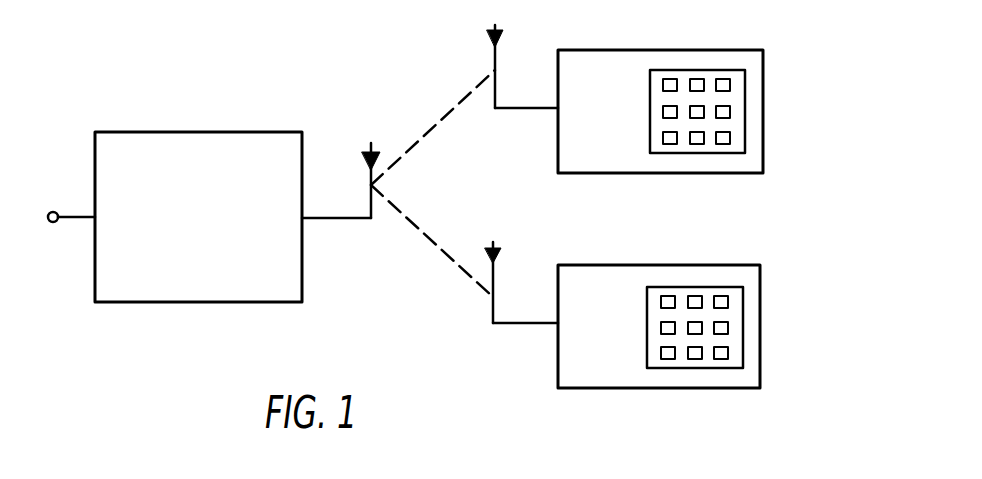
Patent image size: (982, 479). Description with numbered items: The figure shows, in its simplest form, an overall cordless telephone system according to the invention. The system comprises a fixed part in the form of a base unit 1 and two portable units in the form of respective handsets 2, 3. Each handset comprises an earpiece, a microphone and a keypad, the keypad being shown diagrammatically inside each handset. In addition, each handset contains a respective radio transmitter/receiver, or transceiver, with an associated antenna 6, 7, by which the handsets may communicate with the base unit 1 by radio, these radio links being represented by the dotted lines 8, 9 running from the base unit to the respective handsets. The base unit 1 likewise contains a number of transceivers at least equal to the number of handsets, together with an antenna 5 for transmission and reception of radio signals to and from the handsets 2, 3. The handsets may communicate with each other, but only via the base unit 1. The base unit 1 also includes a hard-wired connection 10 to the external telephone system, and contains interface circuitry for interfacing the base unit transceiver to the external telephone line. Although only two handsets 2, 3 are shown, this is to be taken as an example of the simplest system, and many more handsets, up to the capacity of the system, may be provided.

The base unit 1 is at (220, 230).
The handset 2 is at (691, 114).
The handset 3 is at (691, 323).
The antenna 5 is at (371, 143).
The antenna 6 is at (495, 57).
The antenna 7 is at (493, 316).
The dotted line 8 is at (430, 128).
The dotted line 9 is at (435, 245).
The hard-wired connection 10 is at (78, 215).